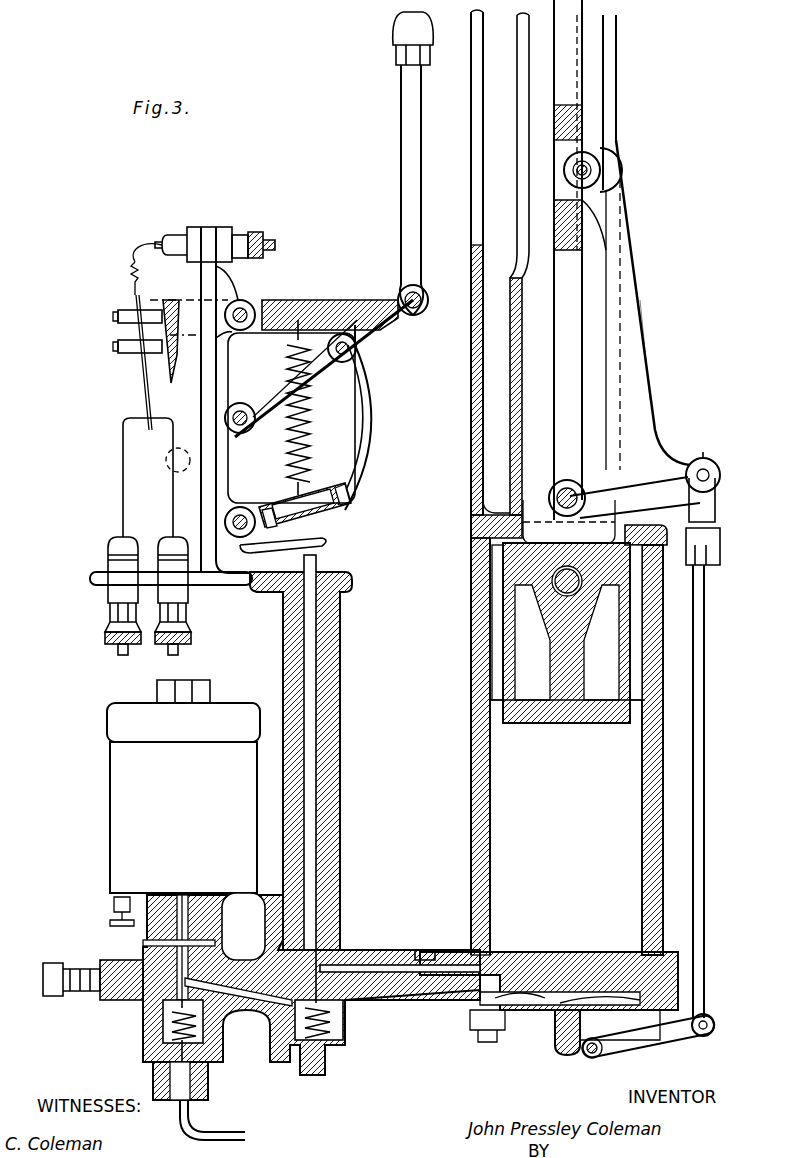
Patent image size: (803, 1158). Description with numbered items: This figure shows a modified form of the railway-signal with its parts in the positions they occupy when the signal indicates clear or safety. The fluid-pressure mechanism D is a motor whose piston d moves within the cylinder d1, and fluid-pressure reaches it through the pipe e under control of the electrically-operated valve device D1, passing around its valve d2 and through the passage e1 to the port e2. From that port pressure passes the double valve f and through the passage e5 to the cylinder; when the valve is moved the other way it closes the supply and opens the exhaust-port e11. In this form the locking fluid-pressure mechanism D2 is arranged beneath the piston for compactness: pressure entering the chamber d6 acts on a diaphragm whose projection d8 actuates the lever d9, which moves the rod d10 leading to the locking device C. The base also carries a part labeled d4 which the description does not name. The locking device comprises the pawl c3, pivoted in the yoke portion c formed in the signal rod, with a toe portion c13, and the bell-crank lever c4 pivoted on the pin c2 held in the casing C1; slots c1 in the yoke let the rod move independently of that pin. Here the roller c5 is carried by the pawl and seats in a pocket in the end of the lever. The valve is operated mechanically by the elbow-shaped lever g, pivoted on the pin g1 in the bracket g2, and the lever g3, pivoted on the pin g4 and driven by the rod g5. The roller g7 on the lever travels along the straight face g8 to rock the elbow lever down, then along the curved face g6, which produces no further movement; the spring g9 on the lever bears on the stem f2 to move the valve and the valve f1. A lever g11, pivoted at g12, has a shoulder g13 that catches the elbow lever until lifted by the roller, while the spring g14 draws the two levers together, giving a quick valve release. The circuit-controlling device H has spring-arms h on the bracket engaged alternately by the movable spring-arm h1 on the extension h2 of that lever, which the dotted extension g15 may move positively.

The locking device C is at (653, 305).
The casing C1 is at (471, 463).
The yoke portion c is at (612, 72).
The longitudinally-extending slots c1 is at (568, 408).
The pin c2 is at (567, 498).
The pawl c3 is at (567, 97).
The lever c4 is at (638, 365).
The roller c5 is at (583, 177).
The toe portion c13 is at (607, 248).
The fluid-pressure mechanism D is at (549, 512).
The electrically-operated valve device D1 is at (183, 803).
The fluid-pressure mechanism D2 is at (575, 1044).
The piston d is at (575, 715).
The cylinder d1 is at (484, 870).
The valve d2 is at (163, 1005).
The inlet valve d4 is at (518, 1005).
The chamber d6 is at (560, 1005).
The projection d8 is at (560, 1055).
The lever d9 is at (653, 1045).
The rod d10 is at (706, 686).
The pipe e is at (230, 1132).
The passage e1 is at (252, 1003).
The port e2 is at (160, 945).
The passage e5 is at (405, 957).
The exhaust-port e11 is at (285, 936).
The double valve f is at (280, 1035).
The valve f1 is at (318, 942).
The stem f2 is at (310, 640).
The lever g is at (347, 493).
The pin g1 is at (240, 522).
The bracket g2 is at (220, 587).
The lever g3 is at (322, 370).
The pin g4 is at (240, 418).
The rod g5 is at (411, 126).
The curved face g6 is at (372, 440).
The roller g7 is at (347, 368).
The straight face g8 is at (352, 345).
The spring g9 is at (312, 523).
The lever g11 is at (300, 310).
The pivot g12 is at (240, 315).
The shoulder portion g13 is at (392, 325).
The spring g14 is at (305, 455).
The extension g15 is at (193, 430).
The circuit-controlling device H is at (165, 314).
The spring-arms h is at (172, 497).
The movable spring-arm h1 is at (148, 383).
The extension h2 is at (113, 325).